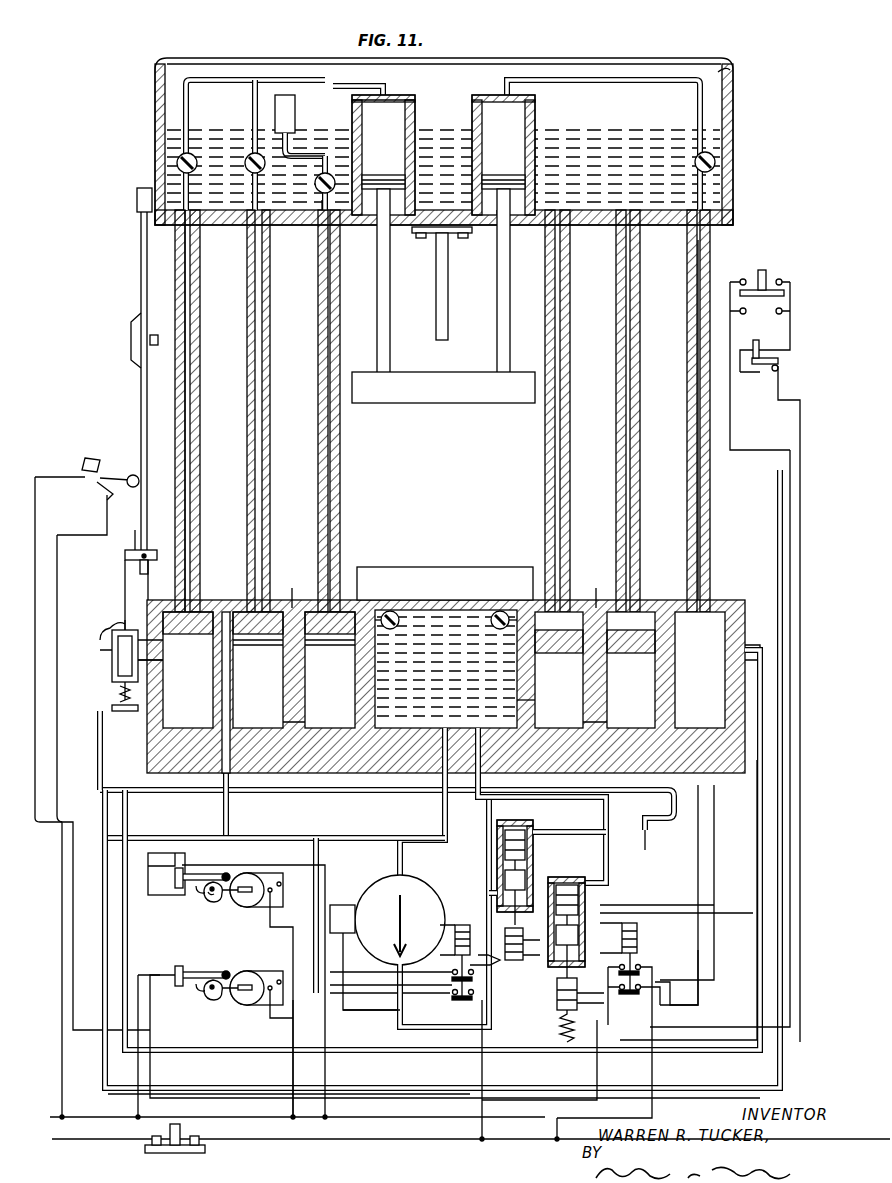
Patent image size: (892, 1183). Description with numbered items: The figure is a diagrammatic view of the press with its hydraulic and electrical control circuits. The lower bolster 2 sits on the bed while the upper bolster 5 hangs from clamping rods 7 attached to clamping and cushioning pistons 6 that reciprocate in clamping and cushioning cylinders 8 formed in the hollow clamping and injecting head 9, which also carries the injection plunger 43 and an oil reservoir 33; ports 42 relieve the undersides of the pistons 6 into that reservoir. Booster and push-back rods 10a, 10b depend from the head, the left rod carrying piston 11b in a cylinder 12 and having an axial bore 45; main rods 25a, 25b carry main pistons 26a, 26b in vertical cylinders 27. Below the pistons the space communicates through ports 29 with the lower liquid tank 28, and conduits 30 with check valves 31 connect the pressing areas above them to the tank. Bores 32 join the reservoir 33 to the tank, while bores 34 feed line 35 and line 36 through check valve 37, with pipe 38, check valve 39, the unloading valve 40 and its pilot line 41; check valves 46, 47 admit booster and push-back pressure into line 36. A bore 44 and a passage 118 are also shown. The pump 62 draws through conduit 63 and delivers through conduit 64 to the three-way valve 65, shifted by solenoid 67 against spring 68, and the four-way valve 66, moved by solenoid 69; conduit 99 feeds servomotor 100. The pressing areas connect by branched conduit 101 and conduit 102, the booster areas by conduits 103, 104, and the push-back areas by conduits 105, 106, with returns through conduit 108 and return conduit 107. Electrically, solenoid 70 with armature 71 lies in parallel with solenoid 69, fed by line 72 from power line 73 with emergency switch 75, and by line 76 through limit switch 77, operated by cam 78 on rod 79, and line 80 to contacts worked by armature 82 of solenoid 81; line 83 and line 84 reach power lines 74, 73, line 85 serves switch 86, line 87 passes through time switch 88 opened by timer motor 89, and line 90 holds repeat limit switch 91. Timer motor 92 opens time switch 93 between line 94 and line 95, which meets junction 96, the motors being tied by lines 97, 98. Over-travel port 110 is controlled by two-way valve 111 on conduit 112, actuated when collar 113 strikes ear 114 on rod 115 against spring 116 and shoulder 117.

The lower bolster 2 is at (450, 576).
The upper bolster 5 is at (443, 387).
The clamping and cushioning pistons 6 is at (378, 177).
The clamping rods 7 is at (386, 308).
The clamping and cushioning cylinders 8 is at (415, 103).
The clamping and injecting head 9 is at (733, 100).
The booster and push-back rod 10a is at (710, 242).
The booster and push-back rod 10b is at (193, 388).
The booster and push-back piston 11b is at (178, 646).
The cylinders 12 is at (176, 698).
The main rods 25a is at (616, 316).
The main rods 25b is at (275, 340).
The main pistons 26a is at (633, 650).
The main pistons 26b is at (328, 650).
The vertical cylinders 27 is at (535, 700).
The lower liquid tank 28 is at (430, 618).
The ports 29 is at (355, 722).
The conduits 30 is at (445, 588).
The check valve 31 is at (390, 610).
The bores 32 is at (224, 222).
The oil reservoir 33 is at (722, 78).
The bores 34 is at (330, 424).
The line 35 is at (326, 200).
The line 36 is at (186, 100).
The check valve 37 is at (315, 195).
The pipe 38 is at (278, 122).
The check valve 39 is at (248, 153).
The relief or unloading valve 40 is at (275, 99).
The line 41 is at (318, 152).
The ports 42 is at (521, 216).
The injection plunger 43 is at (448, 326).
The tube bore 44 is at (688, 504).
The axial bore 45 is at (190, 442).
The check valve 46 is at (715, 160).
The check valve 47 is at (177, 162).
The one-way variable delivery pump 62 is at (420, 880).
The conduit 63 is at (396, 850).
The conduit 64 is at (444, 1030).
The three-way control valve 65 is at (586, 874).
The four-way control valve 66 is at (533, 822).
The solenoid 67 is at (572, 1011).
The spring 68 is at (575, 1036).
The solenoid 69 is at (514, 960).
The solenoid 70 is at (474, 920).
The armature 71 is at (402, 996).
The line 72 is at (482, 1128).
The power line 73 is at (276, 1140).
The power line 74 is at (264, 1116).
The emergency switch 75 is at (177, 1153).
The line 76 is at (38, 512).
The limit switch 77 is at (120, 470).
The cam 78 is at (133, 338).
The rod 79 is at (141, 256).
The line 80 is at (62, 584).
The solenoid 81 is at (640, 936).
The armature 82 is at (630, 1000).
The line 83 is at (60, 996).
The line 84 is at (654, 1110).
The line 85 is at (790, 470).
The switch 86 is at (766, 276).
The line 87 is at (370, 1100).
The time switch 88 is at (192, 970).
The timer motor 89 is at (252, 1004).
The line 90 is at (800, 424).
The repeat limit switch 91 is at (770, 374).
The timer motor 92 is at (252, 906).
The time switch 93 is at (198, 896).
The line 94 is at (272, 866).
The line 95 is at (166, 874).
The point of juncture 96 is at (492, 964).
The line 97 is at (293, 1040).
The line 98 is at (338, 1002).
The conduit 99 is at (383, 1016).
The servomotor 100 is at (348, 905).
The branched conduit 101 is at (654, 832).
The conduit 102 is at (488, 874).
The conduit 103 is at (732, 1080).
The conduit 104 is at (480, 1088).
The conduits 105 is at (758, 792).
The conduit 106 is at (670, 910).
The return conduit 107 is at (600, 798).
The conduit 108 is at (574, 838).
The over-travel port 110 is at (150, 670).
The two-way valve 111 is at (118, 660).
The conduit 112 is at (358, 840).
The adjustable collar 113 is at (152, 564).
The ear 114 is at (136, 526).
The rod 115 is at (125, 594).
The spring 116 is at (120, 690).
The shoulder 117 is at (112, 708).
The passage 118 is at (761, 643).